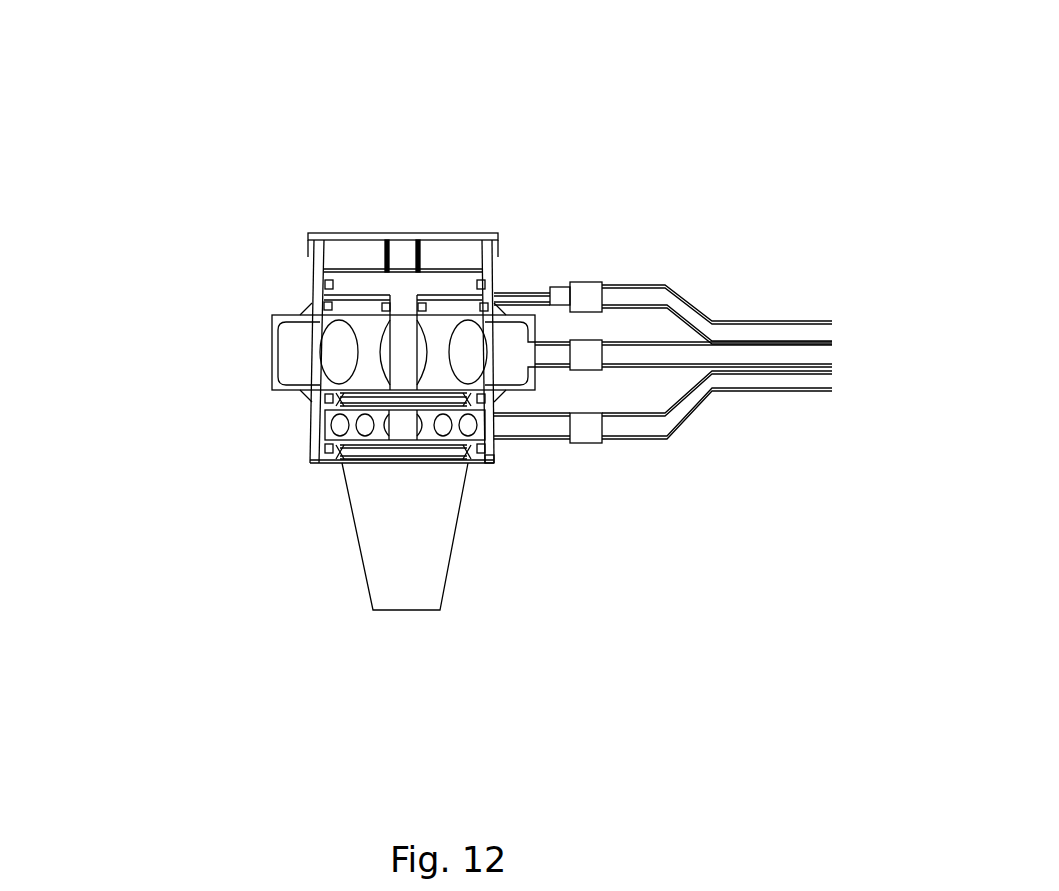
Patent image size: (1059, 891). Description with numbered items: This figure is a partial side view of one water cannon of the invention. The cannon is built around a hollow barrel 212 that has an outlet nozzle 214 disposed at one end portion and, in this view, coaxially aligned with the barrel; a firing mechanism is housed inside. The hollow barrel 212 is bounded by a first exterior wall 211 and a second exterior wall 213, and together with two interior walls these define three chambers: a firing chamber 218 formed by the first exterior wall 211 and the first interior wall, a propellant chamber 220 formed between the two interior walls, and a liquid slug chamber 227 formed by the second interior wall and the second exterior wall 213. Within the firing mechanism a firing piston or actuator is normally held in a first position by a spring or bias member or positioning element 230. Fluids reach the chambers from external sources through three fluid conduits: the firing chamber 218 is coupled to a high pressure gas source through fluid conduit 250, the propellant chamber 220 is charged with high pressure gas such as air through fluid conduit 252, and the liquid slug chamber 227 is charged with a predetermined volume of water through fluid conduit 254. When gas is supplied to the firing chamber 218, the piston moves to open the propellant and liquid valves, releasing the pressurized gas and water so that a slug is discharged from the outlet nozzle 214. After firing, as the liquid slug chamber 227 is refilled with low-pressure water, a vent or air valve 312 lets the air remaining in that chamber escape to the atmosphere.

The first exterior wall 211 is at (348, 232).
The hollow barrel 212 is at (280, 425).
The second exterior wall 213 is at (478, 467).
The outlet nozzle 214 is at (330, 551).
The firing chamber 218 is at (315, 300).
The propellant chamber 220 is at (300, 356).
The liquid slug chamber 227 is at (328, 435).
The spring or bias member or positioning element 230 is at (423, 237).
The vent or air valve 312 is at (388, 200).
The fluid conduit 250 is at (762, 305).
The fluid conduit 252 is at (824, 337).
The fluid conduit 254 is at (787, 408).